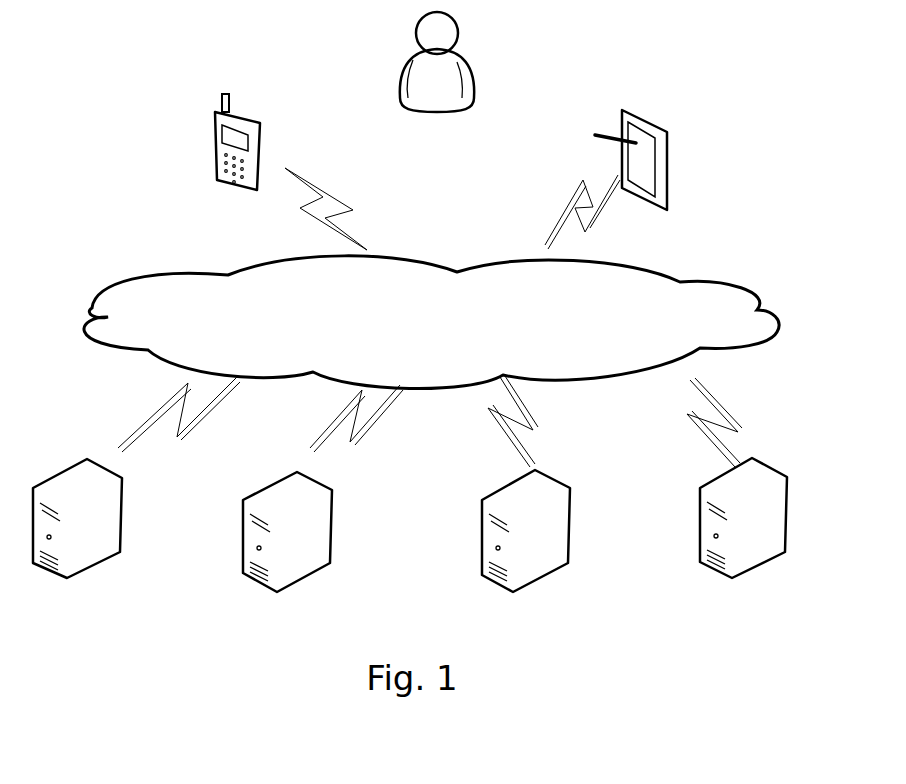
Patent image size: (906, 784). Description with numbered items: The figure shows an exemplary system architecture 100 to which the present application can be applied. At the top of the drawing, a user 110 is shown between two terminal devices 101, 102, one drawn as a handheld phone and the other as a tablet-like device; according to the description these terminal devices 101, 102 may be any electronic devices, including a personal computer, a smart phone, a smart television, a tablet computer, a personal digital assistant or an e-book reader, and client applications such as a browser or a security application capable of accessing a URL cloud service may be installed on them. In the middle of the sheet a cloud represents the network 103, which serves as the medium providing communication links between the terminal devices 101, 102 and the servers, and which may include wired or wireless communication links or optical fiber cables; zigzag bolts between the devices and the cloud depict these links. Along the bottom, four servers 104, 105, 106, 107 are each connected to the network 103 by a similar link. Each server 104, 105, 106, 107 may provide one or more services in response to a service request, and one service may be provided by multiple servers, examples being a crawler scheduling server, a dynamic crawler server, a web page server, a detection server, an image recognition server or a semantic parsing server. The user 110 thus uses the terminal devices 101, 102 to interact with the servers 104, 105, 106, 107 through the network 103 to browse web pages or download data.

The system architecture 100 is at (718, 43).
The terminal device 101 is at (237, 159).
The terminal device 102 is at (631, 174).
The network 103 is at (431, 322).
The server 104 is at (77, 533).
The server 105 is at (287, 546).
The server 106 is at (526, 545).
The server 107 is at (743, 533).
The user 110 is at (437, 74).